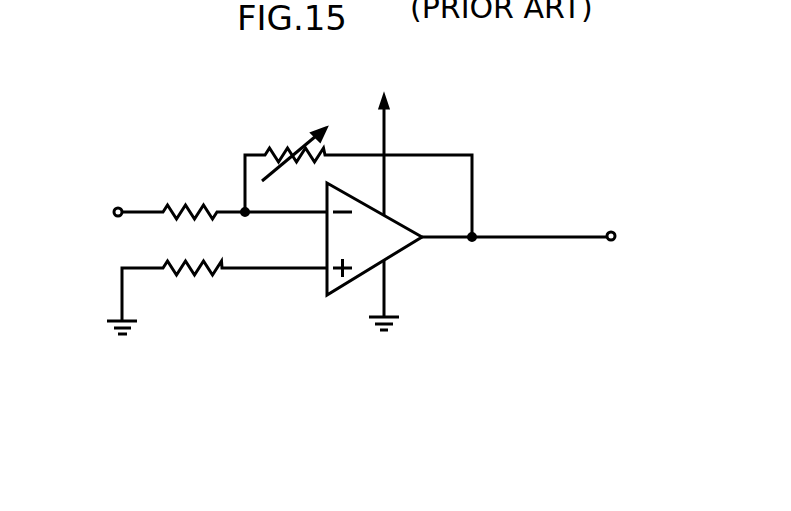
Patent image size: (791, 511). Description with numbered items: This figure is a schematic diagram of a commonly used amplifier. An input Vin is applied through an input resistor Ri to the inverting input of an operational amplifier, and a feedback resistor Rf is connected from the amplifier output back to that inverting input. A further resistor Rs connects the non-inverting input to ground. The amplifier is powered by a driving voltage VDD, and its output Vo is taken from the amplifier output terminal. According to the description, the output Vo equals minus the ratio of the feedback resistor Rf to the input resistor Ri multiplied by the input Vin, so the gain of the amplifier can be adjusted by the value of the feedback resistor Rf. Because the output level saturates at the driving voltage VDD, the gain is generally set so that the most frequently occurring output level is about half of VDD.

The feedback resistor Rf is at (358, 163).
The input resistor Ri is at (224, 192).
The non-inverting input resistor Rs is at (217, 297).
The input Vin is at (87, 235).
The output Vo is at (634, 240).
The driving voltage VDD is at (412, 140).